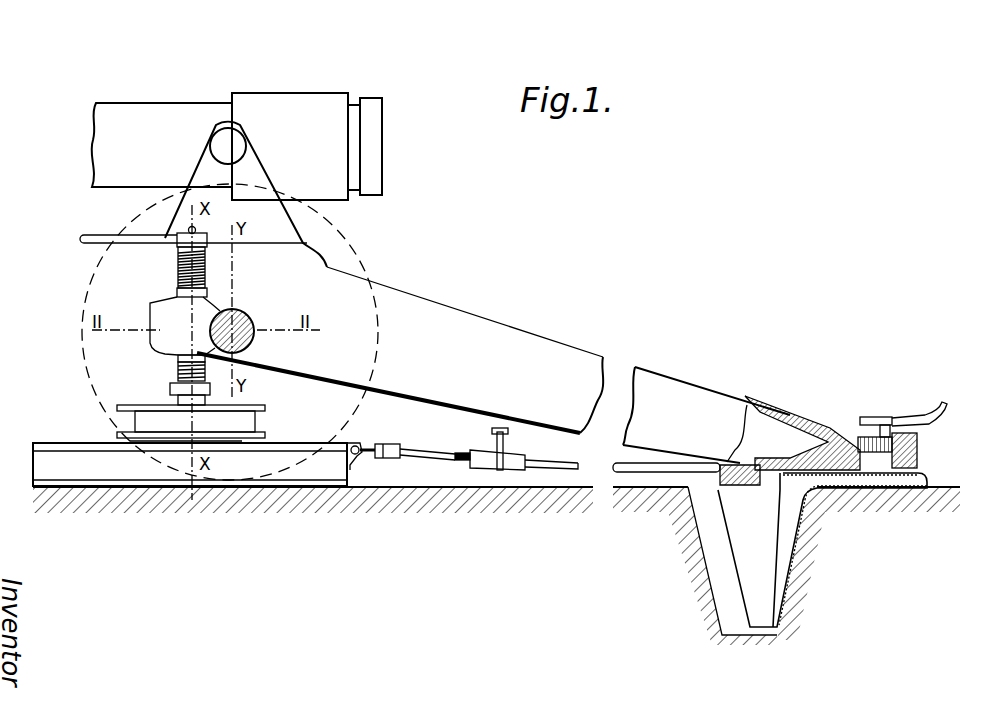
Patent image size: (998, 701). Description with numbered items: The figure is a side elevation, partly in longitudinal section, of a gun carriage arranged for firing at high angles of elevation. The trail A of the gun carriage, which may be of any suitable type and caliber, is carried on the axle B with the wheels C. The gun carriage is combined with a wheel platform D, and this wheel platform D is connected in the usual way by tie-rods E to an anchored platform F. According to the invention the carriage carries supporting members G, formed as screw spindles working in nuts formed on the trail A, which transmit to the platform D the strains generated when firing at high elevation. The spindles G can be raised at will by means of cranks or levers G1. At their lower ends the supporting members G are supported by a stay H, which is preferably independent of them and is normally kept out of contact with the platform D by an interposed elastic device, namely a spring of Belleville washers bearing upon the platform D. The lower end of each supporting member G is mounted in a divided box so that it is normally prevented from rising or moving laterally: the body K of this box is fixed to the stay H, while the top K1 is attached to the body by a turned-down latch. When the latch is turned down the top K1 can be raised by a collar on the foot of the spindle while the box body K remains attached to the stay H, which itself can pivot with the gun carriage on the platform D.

The trail of a gun carriage A is at (430, 310).
The axle B is at (247, 318).
The wheels C is at (93, 373).
The wheel platform D is at (98, 470).
The tie-rods E is at (432, 456).
The anchored platform F is at (845, 486).
The supporting members G is at (178, 270).
The cranks or levers G1 is at (102, 240).
The stay H is at (135, 420).
The body of the divided box K is at (178, 397).
The top of the divided box K1 is at (176, 380).